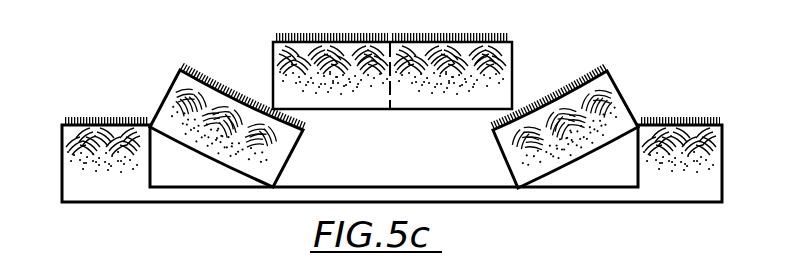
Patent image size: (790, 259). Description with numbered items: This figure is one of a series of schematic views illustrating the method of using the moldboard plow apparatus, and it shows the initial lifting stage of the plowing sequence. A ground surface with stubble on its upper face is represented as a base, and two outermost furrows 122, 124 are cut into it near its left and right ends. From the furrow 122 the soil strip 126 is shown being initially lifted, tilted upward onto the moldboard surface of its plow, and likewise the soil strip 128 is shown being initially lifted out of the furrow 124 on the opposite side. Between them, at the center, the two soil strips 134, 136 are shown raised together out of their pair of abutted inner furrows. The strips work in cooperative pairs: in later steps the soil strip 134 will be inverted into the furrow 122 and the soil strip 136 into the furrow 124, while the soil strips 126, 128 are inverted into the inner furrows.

The furrow 122 is at (183, 173).
The furrow 124 is at (608, 168).
The soil strip 126 is at (183, 132).
The soil strip 128 is at (617, 128).
The soil strip 134 is at (333, 88).
The soil strip 136 is at (447, 90).